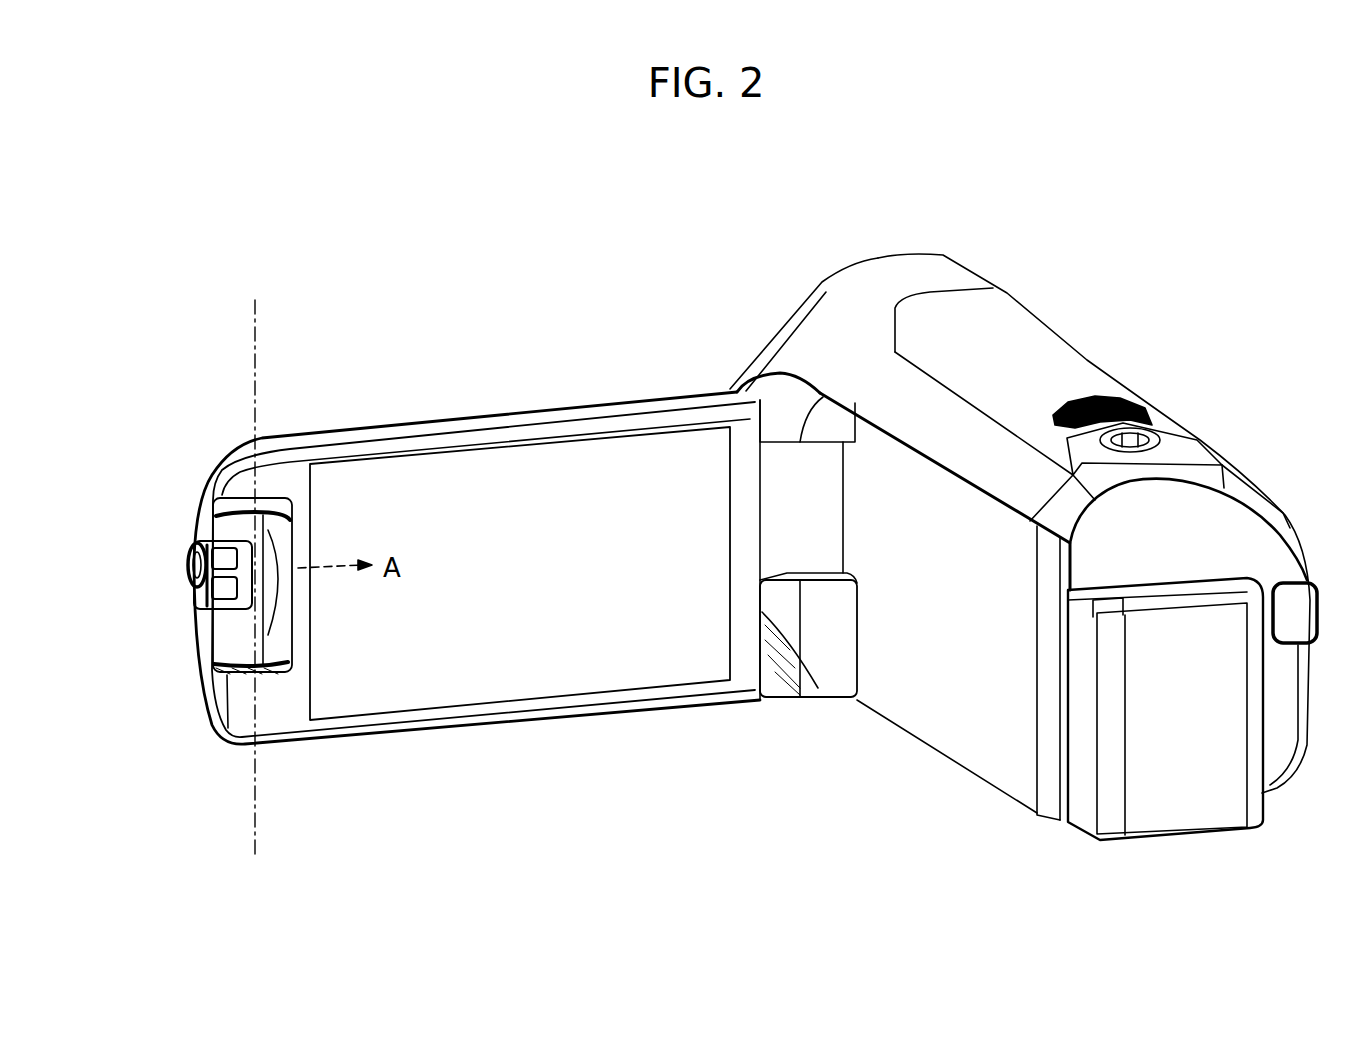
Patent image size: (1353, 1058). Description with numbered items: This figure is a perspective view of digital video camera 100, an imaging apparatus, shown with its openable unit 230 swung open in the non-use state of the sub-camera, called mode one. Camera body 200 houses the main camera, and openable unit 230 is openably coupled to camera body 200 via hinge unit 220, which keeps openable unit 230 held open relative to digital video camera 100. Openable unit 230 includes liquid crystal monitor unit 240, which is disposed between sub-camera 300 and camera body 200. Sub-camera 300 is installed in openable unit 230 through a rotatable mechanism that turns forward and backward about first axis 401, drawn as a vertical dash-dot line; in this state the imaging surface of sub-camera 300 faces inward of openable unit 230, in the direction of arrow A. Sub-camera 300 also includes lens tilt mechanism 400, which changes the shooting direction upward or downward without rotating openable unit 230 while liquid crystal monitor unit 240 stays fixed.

The digital video camera 100 is at (747, 274).
The camera body 200 is at (1030, 378).
The hinge unit 220 is at (802, 503).
The openable unit 230 is at (664, 710).
The liquid crystal monitor unit 240 is at (533, 640).
The sub-camera 300 is at (225, 627).
The lens tilt mechanism 400 is at (190, 570).
The first axis 401 is at (255, 337).